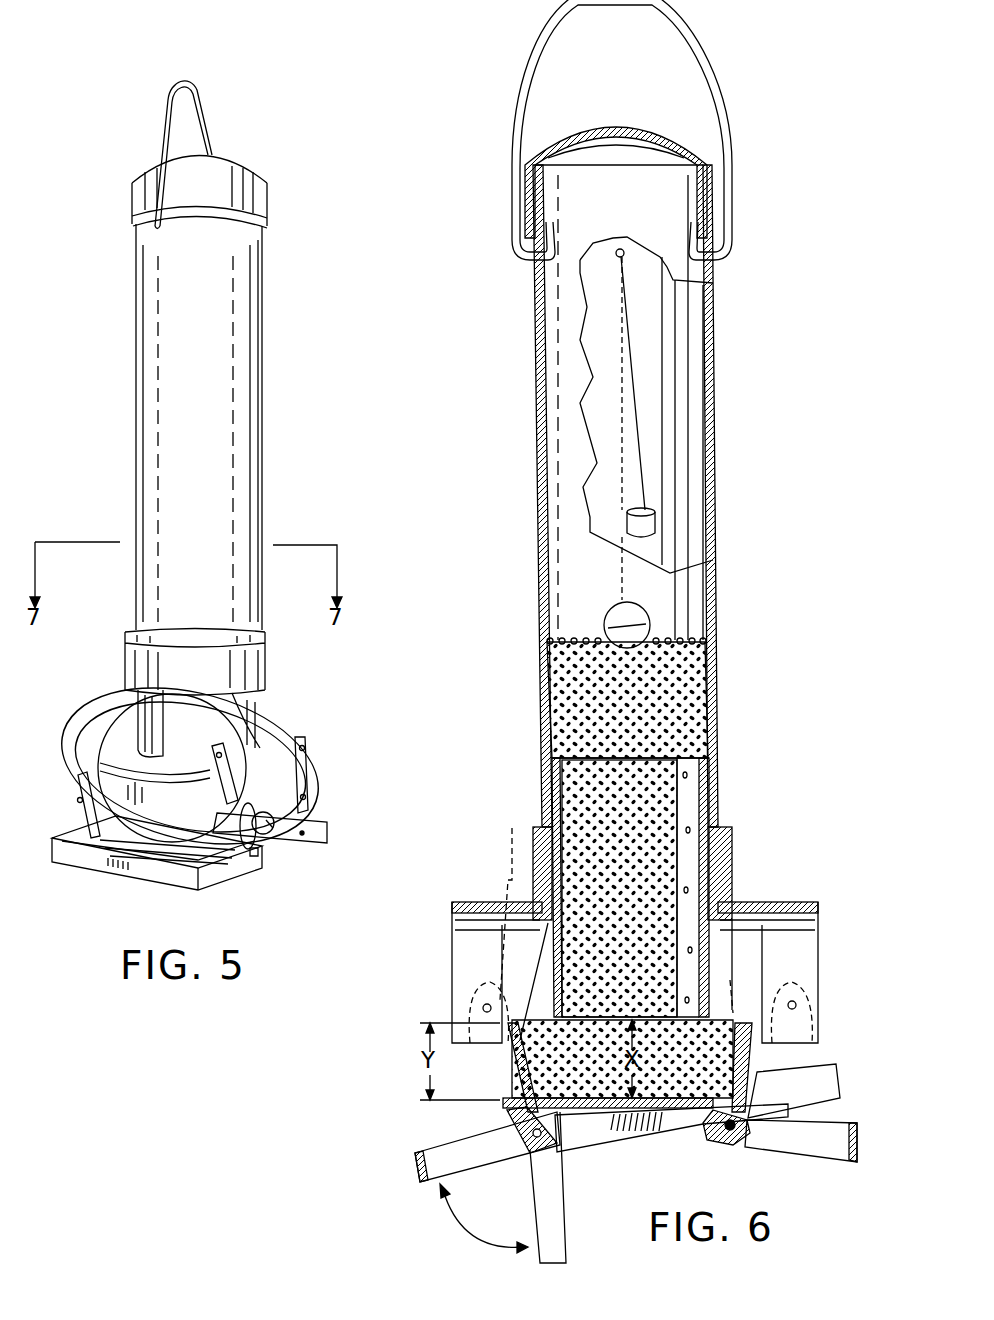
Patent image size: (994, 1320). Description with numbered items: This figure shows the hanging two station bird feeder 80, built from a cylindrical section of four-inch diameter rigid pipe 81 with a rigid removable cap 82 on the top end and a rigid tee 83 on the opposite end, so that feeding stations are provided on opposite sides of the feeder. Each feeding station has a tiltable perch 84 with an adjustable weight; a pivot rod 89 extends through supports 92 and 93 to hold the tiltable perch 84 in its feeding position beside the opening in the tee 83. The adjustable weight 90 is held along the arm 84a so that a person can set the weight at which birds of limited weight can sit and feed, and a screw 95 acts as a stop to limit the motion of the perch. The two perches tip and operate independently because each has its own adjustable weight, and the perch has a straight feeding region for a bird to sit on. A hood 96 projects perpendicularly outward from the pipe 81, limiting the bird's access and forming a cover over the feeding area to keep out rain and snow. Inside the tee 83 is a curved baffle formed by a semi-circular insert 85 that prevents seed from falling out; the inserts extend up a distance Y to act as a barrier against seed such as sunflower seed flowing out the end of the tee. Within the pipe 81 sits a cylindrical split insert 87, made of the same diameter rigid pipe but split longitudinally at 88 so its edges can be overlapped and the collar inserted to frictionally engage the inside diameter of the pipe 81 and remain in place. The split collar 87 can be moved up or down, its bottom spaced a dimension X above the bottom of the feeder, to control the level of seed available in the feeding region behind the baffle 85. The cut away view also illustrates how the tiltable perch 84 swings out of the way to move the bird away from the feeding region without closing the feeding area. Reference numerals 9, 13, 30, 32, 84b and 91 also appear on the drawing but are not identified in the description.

In FIG. 6, the particulate material 9 is at (572, 640).
In FIG. 5, the handle 13 is at (160, 120).
In FIG. 6, the handle 13 is at (537, 66).
In FIG. 6, the ball 30 is at (614, 611).
In FIG. 6, the weight 32 is at (627, 523).
In FIG. 5, the hanging two station bird feeder 80 is at (316, 406).
In FIG. 5, the rigid pipe 81 is at (258, 322).
In FIG. 6, the rigid pipe 81 is at (717, 625).
In FIG. 5, the removable cap 82 is at (262, 198).
In FIG. 5, the tee 83 is at (258, 665).
In FIG. 5, the tiltable perch 84 is at (96, 880).
In FIG. 6, the tiltable perch 84 is at (610, 1163).
In FIG. 5, the arm 84a is at (328, 833).
In FIG. 6, the base legs 84b is at (853, 1115).
In FIG. 5, the semi-circular insert 85 is at (162, 826).
In FIG. 6, the semi-circular insert 85 is at (512, 1055).
In FIG. 5, the cylindrical split insert 87 is at (150, 745).
In FIG. 6, the cylindrical split insert 87 is at (563, 758).
In FIG. 6, the longitudinal split 88 is at (678, 788).
In FIG. 5, the pivot rod 89 is at (256, 857).
In FIG. 5, the adjustable weight 90 is at (265, 845).
In FIG. 5, the nut 91 is at (272, 838).
In FIG. 5, the support 92 is at (230, 783).
In FIG. 5, the support 93 is at (78, 788).
In FIG. 5, the screw 95 is at (306, 797).
In FIG. 5, the hood 96 is at (76, 714).
In FIG. 6, the hood 96 is at (458, 900).